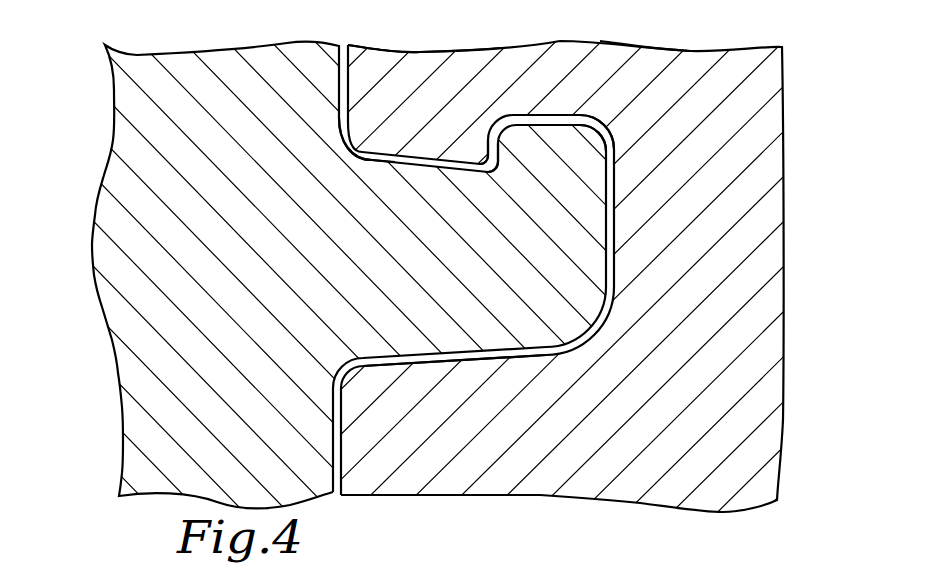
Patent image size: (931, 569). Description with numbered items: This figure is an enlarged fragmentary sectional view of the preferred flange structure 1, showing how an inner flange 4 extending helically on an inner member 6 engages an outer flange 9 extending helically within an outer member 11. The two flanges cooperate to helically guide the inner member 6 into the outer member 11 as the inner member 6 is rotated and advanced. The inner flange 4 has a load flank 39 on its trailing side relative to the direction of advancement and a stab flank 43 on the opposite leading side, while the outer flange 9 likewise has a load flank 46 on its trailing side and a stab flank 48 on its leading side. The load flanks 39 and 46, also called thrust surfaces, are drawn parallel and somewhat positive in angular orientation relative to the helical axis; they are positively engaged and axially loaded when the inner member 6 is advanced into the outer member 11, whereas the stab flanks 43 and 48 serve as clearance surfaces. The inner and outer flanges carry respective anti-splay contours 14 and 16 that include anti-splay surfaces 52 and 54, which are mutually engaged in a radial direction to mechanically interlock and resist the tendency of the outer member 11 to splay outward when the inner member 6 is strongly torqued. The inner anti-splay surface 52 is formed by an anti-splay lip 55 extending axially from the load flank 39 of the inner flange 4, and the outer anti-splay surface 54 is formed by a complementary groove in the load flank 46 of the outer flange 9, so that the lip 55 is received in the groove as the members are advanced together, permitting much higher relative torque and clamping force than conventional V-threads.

The flange structure 1 is at (418, 97).
The inner flange 4 is at (590, 258).
The inner member 6 is at (150, 197).
The outer flange 9 is at (405, 77).
The outer member 11 is at (743, 102).
The inner anti-splay contour 14 is at (501, 140).
The outer anti-splay contour 16 is at (578, 153).
The load flank 39 is at (390, 155).
The stab flank 43 is at (477, 363).
The load flank 46 is at (418, 165).
The stab flank 48 is at (530, 345).
The inner anti-splay surface 52 is at (487, 152).
The outer anti-splay surface 54 is at (541, 114).
The anti-splay lip 55 is at (663, 48).